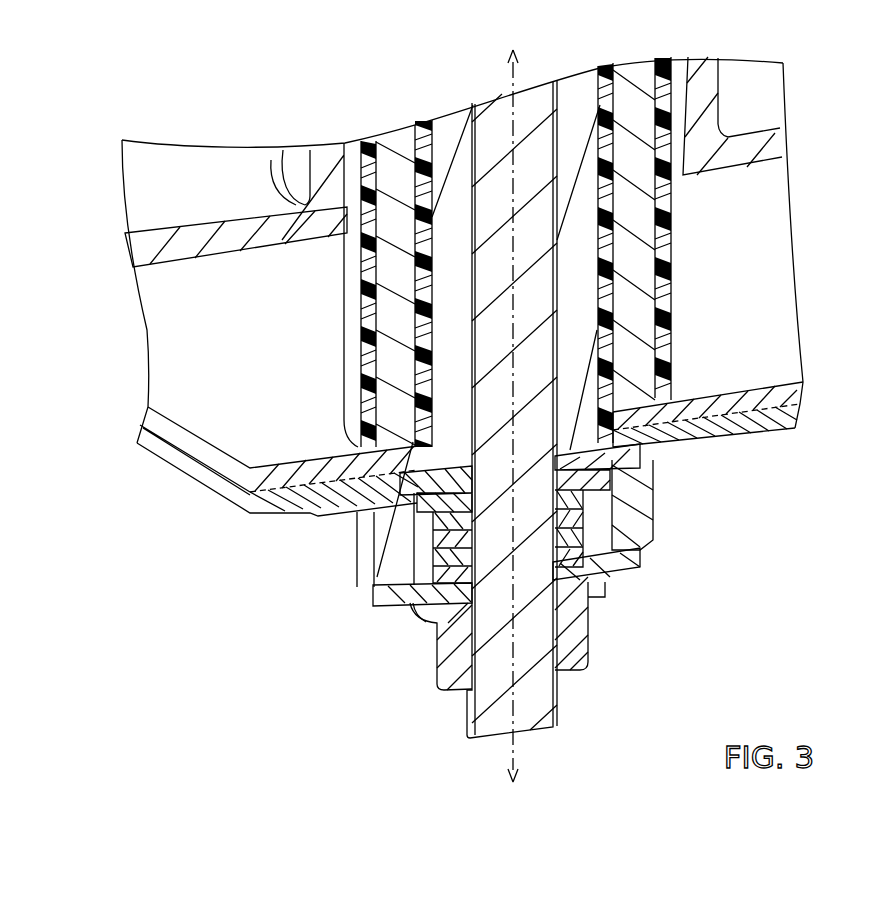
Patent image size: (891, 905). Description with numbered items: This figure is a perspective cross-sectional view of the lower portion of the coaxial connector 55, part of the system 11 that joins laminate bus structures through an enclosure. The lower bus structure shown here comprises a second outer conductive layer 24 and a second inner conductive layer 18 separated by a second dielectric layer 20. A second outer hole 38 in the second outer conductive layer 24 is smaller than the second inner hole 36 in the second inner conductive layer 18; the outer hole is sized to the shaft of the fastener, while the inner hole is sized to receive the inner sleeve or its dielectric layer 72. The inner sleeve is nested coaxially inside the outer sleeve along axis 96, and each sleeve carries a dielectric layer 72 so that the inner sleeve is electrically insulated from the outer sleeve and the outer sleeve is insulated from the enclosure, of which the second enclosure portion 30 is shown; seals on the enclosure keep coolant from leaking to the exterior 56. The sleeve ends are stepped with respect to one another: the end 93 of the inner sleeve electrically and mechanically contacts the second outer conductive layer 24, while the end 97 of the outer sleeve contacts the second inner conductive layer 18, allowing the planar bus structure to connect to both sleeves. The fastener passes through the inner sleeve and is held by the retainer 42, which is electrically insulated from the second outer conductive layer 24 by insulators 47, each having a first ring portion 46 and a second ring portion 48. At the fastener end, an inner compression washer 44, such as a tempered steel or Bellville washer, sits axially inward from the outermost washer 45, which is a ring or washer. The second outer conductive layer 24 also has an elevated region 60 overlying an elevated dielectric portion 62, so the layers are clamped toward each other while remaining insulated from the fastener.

The system 11 is at (122, 666).
The second inner conductive layer 18 is at (800, 385).
The second dielectric layer 20 is at (803, 405).
The second outer conductive layer 24 is at (797, 430).
The second enclosure portion 30 is at (197, 255).
The second inner hole 36 is at (373, 423).
The second outer hole 38 is at (397, 558).
The retainer 42 is at (573, 645).
The compression washer 44 is at (593, 573).
The outermost washer 45 is at (622, 565).
The first ring portion 46 is at (370, 587).
The insulator 47 is at (385, 624).
The second ring portion 48 is at (618, 500).
The coaxial connector 55 is at (193, 330).
The exterior 56 is at (290, 242).
The elevated region 60 is at (680, 460).
The elevated dielectric portion 62 is at (353, 480).
The dielectric layer 72 is at (425, 343).
The end of the inner sleeve 93 is at (652, 343).
The axis 96 is at (514, 748).
The end of the outer sleeve 97 is at (633, 400).